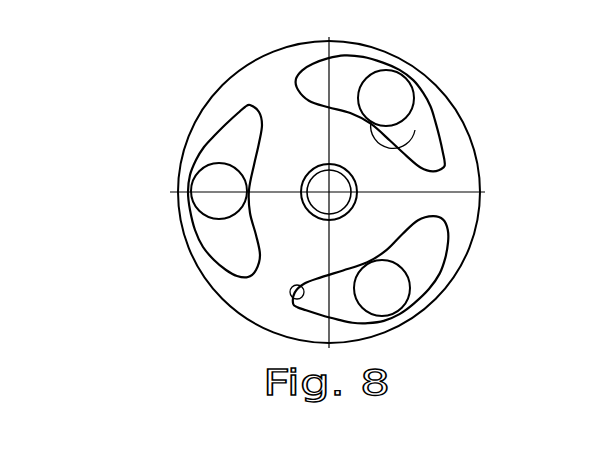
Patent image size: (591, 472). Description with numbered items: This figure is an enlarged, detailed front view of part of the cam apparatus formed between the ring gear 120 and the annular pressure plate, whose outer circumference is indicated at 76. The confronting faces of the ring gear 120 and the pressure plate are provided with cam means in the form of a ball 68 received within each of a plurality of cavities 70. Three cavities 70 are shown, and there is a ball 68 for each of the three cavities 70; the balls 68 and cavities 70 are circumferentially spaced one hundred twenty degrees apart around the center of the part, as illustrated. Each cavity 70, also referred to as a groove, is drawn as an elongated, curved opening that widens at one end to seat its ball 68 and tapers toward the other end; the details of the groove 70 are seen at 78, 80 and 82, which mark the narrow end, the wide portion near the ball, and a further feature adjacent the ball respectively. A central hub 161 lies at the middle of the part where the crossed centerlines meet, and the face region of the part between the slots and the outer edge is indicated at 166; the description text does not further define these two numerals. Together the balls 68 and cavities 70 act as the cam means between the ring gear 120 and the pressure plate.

The ball 68 is at (490, 325).
The cavity 70 is at (239, 130).
The outer circumference of the annular pressure plate 76 is at (178, 167).
The groove detail 78 is at (297, 285).
The groove detail 80 is at (427, 218).
The groove detail 82 is at (425, 100).
The ring gear 120 is at (472, 138).
The central hub 161 is at (312, 166).
The disc face 166 is at (464, 212).